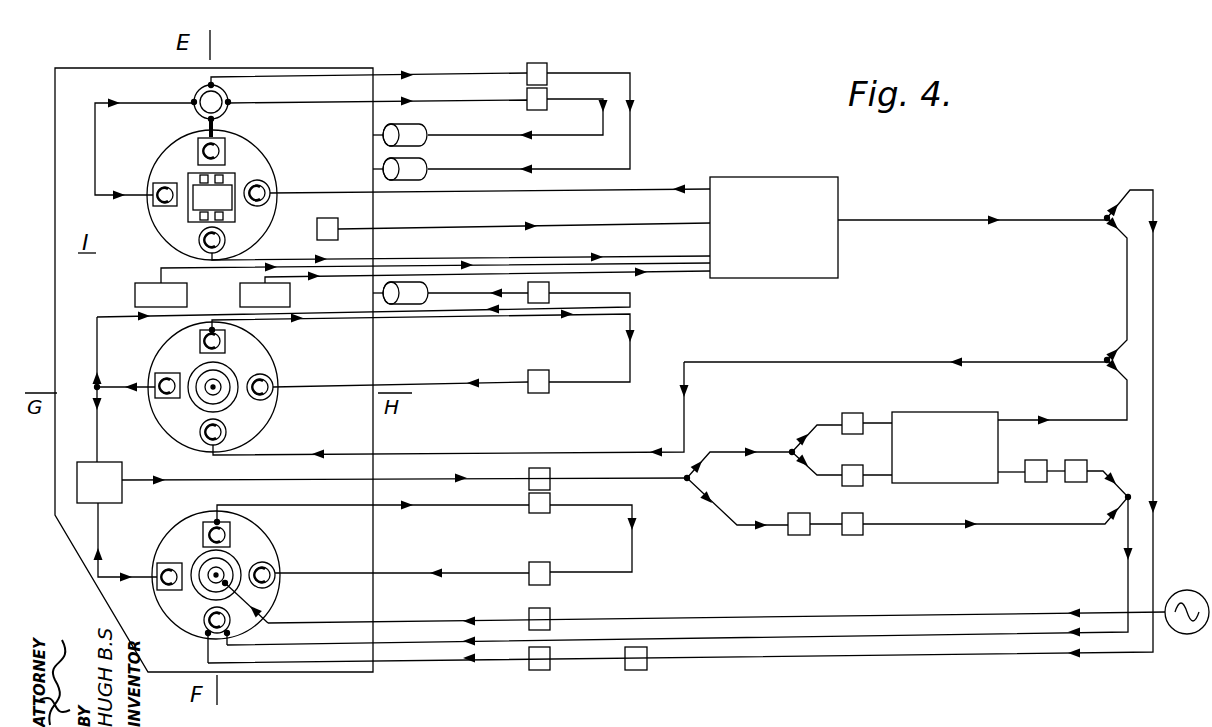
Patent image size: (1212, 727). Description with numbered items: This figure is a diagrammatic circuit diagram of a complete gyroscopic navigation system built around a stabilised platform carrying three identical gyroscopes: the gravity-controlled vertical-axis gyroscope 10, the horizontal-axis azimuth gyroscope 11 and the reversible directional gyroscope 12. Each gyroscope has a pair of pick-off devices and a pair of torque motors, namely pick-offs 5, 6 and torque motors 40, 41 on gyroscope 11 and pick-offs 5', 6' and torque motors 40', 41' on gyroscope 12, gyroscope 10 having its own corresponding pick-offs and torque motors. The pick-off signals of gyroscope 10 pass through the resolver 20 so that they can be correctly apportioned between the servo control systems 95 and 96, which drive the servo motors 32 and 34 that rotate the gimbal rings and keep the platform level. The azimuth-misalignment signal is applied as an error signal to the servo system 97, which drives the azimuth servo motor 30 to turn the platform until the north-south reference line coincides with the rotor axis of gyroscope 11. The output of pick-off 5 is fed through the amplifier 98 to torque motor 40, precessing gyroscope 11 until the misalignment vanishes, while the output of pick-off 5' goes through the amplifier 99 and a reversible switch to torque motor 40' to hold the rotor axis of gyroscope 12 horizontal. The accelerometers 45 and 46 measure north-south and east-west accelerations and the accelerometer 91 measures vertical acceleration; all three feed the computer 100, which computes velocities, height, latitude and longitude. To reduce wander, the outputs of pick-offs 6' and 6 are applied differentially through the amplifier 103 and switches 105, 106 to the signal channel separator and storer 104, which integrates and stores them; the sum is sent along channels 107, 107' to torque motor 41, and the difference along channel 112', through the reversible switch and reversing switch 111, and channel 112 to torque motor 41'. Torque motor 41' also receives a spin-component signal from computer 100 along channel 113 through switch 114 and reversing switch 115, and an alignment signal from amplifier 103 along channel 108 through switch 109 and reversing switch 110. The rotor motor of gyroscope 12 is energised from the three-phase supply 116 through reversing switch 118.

The vertical-axis gyroscope 10 is at (333, 168).
The horizontal-axis gyroscope 11 is at (337, 361).
The reversible directional gyroscope 12 is at (344, 561).
The resolver 20 is at (230, 110).
The pick-off device 5 is at (179, 339).
The pick-off device 6 is at (149, 397).
The torque motor 40 is at (277, 395).
The torque motor 41 is at (229, 427).
The pick-off device 5' is at (191, 528).
The pick-off device 6' is at (152, 590).
The torque motor 40' is at (281, 586).
The torque motor 41' is at (174, 635).
The azimuth servo motor 30 is at (410, 282).
The servo motor 32 is at (410, 124).
The servo motor 34 is at (410, 158).
The accelerometer 45 is at (161, 295).
The accelerometer 46 is at (265, 295).
The accelerometer 91 is at (317, 229).
The servo control system 95 is at (540, 110).
The servo control system 96 is at (540, 62).
The servo system 97 is at (550, 286).
The amplifier 98 is at (553, 357).
The amplifier 99 is at (541, 513).
The computer 100 is at (778, 162).
The amplifier 103 is at (540, 469).
The signal channel separator and storer 104 is at (937, 412).
The switch 105 is at (860, 412).
The switch 106 is at (860, 465).
The channel 107 is at (1071, 331).
The channel 107' is at (895, 351).
The channel 108 is at (748, 527).
The switch 109 is at (800, 535).
The reversing switch 110 is at (852, 535).
The reversing switch 111 is at (1090, 447).
The channel 112 is at (680, 558).
The channel 112' is at (1016, 492).
The channel 113 is at (976, 219).
The switch 114 is at (637, 670).
The reversing switch 115 is at (541, 670).
The three-phase supply 116 is at (1196, 578).
The reversing switch 118 is at (541, 607).